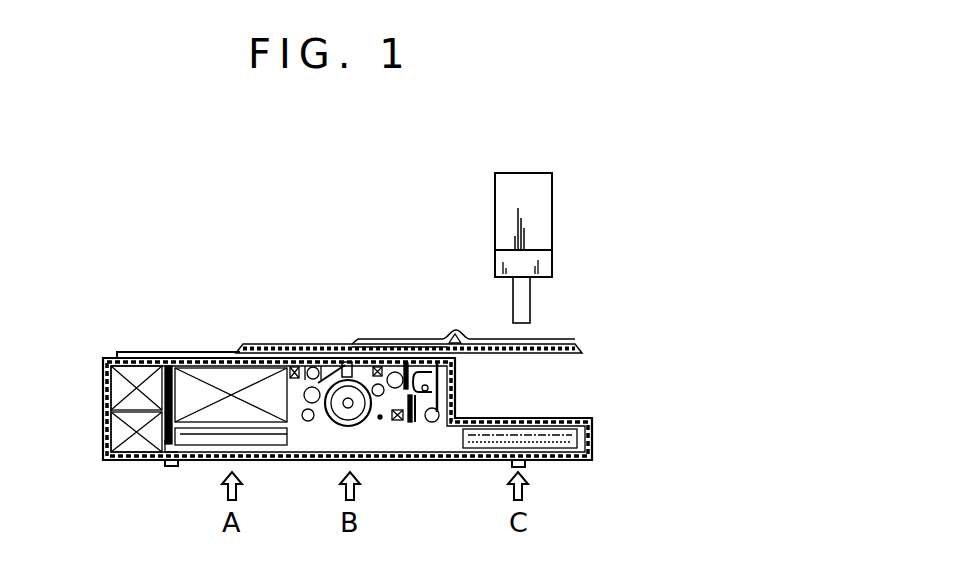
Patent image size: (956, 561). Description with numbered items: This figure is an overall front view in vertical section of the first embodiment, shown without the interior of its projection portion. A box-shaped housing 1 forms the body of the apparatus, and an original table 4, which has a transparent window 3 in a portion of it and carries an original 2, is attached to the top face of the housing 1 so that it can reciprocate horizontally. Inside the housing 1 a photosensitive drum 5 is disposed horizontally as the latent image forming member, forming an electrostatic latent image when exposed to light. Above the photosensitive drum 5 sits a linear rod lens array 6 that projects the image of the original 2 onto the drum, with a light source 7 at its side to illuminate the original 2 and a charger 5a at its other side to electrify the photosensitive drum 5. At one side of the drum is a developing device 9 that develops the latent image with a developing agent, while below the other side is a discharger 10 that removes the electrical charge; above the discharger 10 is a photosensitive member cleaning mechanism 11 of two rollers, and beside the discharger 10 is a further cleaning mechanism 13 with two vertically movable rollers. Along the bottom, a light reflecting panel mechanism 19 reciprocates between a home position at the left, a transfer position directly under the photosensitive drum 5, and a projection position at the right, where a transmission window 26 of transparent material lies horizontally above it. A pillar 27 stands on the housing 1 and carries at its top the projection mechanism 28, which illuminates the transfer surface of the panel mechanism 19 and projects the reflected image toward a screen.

The housing 1 is at (103, 380).
The original 2 is at (447, 340).
The transparent window 3 is at (420, 347).
The original table 4 is at (582, 346).
The photosensitive drum 5 is at (342, 427).
The charger 5a is at (348, 352).
The rod lens array 6 is at (313, 367).
The light source 7 is at (298, 367).
The developing device 9 is at (305, 421).
The discharger 10 is at (390, 425).
The photosensitive member cleaning mechanism 11 is at (395, 372).
The cleaning mechanism 13 is at (433, 421).
The light reflecting panel mechanism 19 is at (192, 445).
The transmission window 26 is at (530, 420).
The pillar 27 is at (528, 298).
The projection mechanism 28 is at (543, 197).